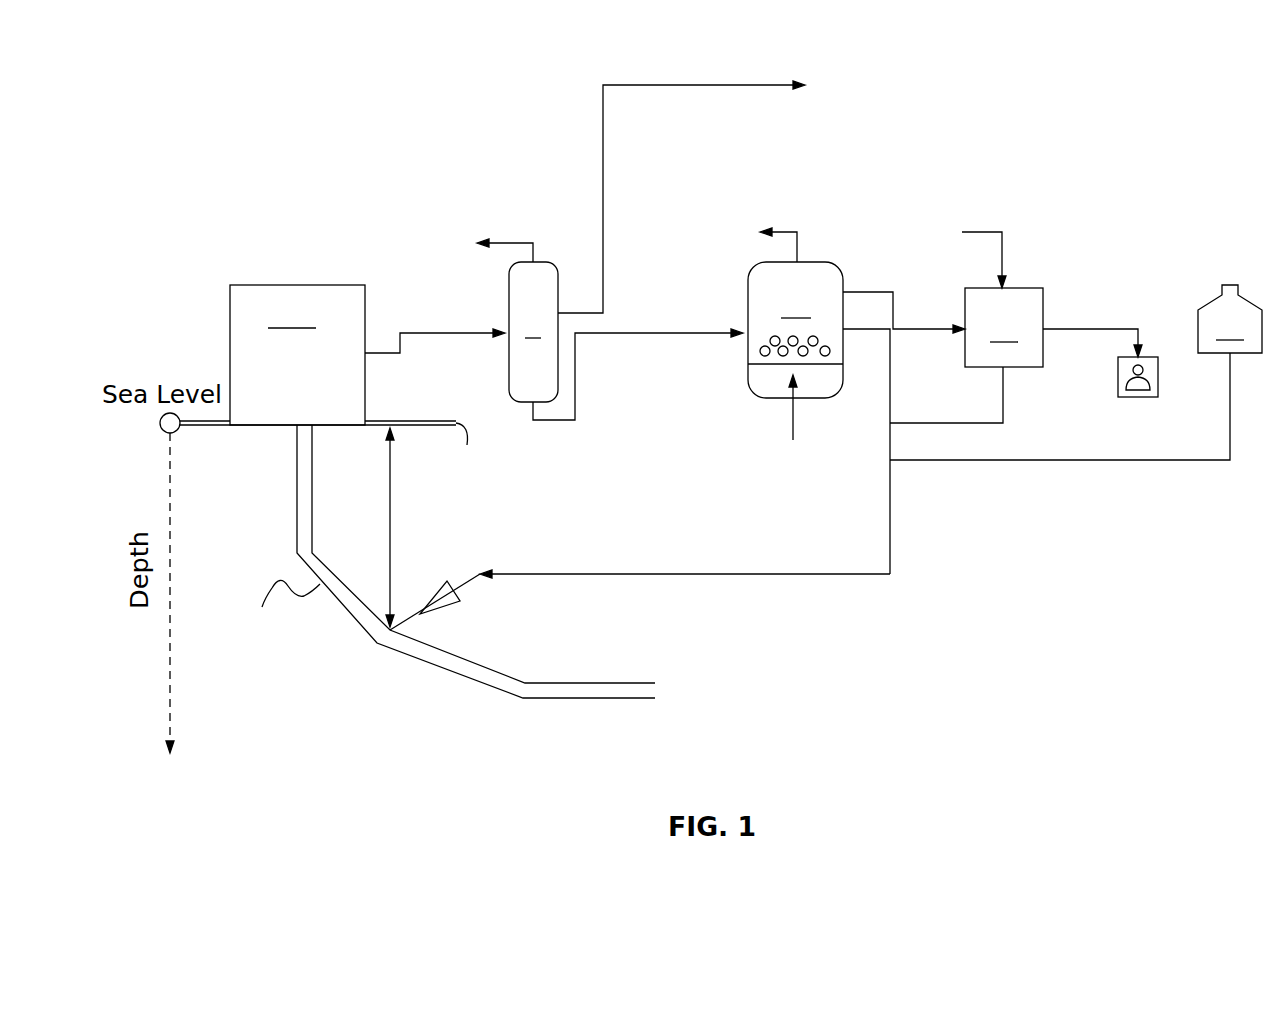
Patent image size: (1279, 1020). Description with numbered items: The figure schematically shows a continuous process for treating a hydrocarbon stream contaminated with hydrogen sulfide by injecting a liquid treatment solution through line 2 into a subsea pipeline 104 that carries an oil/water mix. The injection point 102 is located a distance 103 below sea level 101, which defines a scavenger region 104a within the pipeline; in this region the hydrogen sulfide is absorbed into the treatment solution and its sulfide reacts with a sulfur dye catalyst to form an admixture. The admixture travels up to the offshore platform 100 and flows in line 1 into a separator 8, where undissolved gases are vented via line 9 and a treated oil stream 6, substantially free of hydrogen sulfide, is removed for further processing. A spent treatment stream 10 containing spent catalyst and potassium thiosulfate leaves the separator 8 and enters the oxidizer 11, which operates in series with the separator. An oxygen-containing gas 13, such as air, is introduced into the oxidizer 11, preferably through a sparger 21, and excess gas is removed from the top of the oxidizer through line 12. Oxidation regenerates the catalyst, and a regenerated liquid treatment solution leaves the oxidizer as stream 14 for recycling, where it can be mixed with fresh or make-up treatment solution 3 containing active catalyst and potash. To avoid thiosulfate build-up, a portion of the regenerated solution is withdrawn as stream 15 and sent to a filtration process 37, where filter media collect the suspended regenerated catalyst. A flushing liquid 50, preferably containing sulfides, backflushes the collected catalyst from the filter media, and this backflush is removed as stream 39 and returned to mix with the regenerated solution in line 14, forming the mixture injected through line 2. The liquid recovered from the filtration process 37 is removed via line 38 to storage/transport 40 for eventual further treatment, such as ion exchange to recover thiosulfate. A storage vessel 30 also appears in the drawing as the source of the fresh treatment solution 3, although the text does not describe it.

The offshore platform 100 is at (297, 355).
The line 1 is at (450, 336).
The sea level 101 is at (480, 449).
The distance 103 is at (392, 540).
The subsea pipeline 104 is at (318, 557).
The scavenger region 104a is at (272, 608).
The injection point 102 is at (425, 598).
The liquid treatment solution line 2 is at (638, 575).
The separator 8 is at (533, 332).
The line 9 is at (512, 243).
The treated oil stream 6 is at (707, 87).
The spent treatment stream 10 is at (662, 333).
The oxidizer 11 is at (795, 330).
The sparger 21 is at (752, 368).
The line 12 is at (785, 232).
The oxygen-containing gas 13 is at (795, 425).
The stream 15 is at (863, 293).
The regenerated liquid treatment solution stream 14 is at (877, 330).
The filtration process 37 is at (1004, 327).
The flushing liquid 50 is at (990, 232).
The line 38 is at (1085, 331).
The storage/transport 40 is at (1160, 378).
The stream 39 is at (914, 423).
The storage tank 30 is at (1230, 319).
The fresh treatment solution 3 is at (1168, 461).